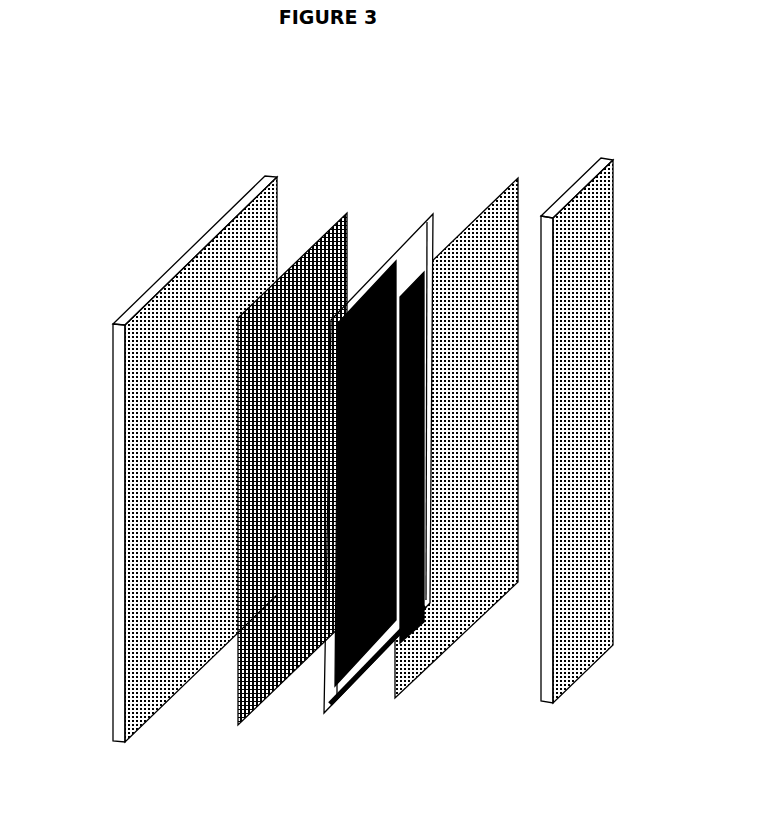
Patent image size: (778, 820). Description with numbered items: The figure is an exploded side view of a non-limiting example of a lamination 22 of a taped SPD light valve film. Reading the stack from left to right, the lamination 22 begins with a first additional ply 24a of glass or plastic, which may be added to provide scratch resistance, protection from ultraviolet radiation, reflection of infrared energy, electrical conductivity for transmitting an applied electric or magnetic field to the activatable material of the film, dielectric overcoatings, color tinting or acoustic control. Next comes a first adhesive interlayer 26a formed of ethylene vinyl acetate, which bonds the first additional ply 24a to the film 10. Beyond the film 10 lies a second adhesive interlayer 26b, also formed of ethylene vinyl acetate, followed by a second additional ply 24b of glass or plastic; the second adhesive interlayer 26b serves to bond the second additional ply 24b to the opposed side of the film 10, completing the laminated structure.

The lamination 22 is at (131, 208).
The film 10 is at (380, 258).
The first additional ply 24a is at (150, 672).
The second additional ply 24b is at (595, 645).
The first adhesive interlayer 26a is at (272, 658).
The second adhesive interlayer 26b is at (442, 632).